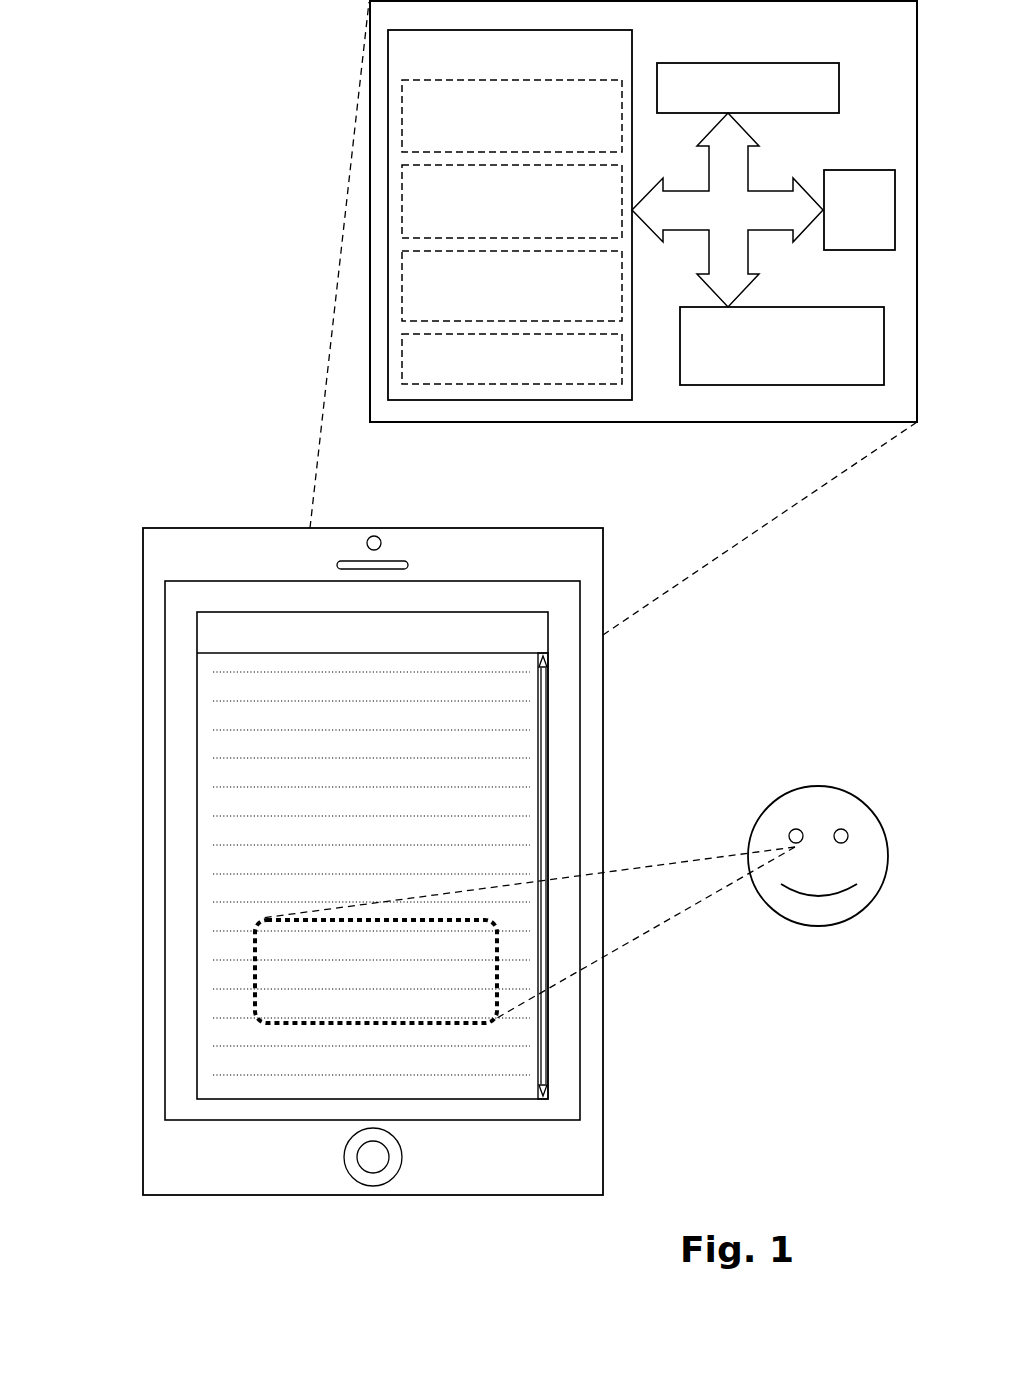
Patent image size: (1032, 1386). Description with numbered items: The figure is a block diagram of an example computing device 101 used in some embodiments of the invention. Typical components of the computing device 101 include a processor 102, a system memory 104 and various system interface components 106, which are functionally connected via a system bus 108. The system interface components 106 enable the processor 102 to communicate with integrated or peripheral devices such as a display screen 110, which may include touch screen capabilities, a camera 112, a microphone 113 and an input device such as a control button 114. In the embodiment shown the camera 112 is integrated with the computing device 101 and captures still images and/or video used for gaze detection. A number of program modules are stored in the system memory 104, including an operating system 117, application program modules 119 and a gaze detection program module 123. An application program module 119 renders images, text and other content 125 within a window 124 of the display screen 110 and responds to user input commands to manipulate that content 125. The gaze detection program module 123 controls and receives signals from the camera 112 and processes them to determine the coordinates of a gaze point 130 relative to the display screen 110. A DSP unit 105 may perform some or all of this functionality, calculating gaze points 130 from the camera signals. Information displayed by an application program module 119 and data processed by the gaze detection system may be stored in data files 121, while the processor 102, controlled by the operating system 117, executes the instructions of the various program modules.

The computing device 101 is at (178, 527).
The processor 102 is at (748, 88).
The system memory 104 is at (510, 215).
The digital signal processing (DSP) unit 105 is at (859, 210).
The system interface components 106 is at (782, 346).
The system bus 108 is at (727, 210).
The display screen 110 is at (560, 792).
The camera 112 is at (376, 533).
The microphone 113 is at (393, 561).
The control button 114 is at (373, 1186).
The operating system 117 is at (512, 116).
The application program module 119 is at (512, 201).
The data files 121 is at (512, 359).
The gaze detection program module 123 is at (512, 286).
The window 124 is at (197, 673).
The content 125 is at (217, 777).
The gaze point 130 is at (253, 978).